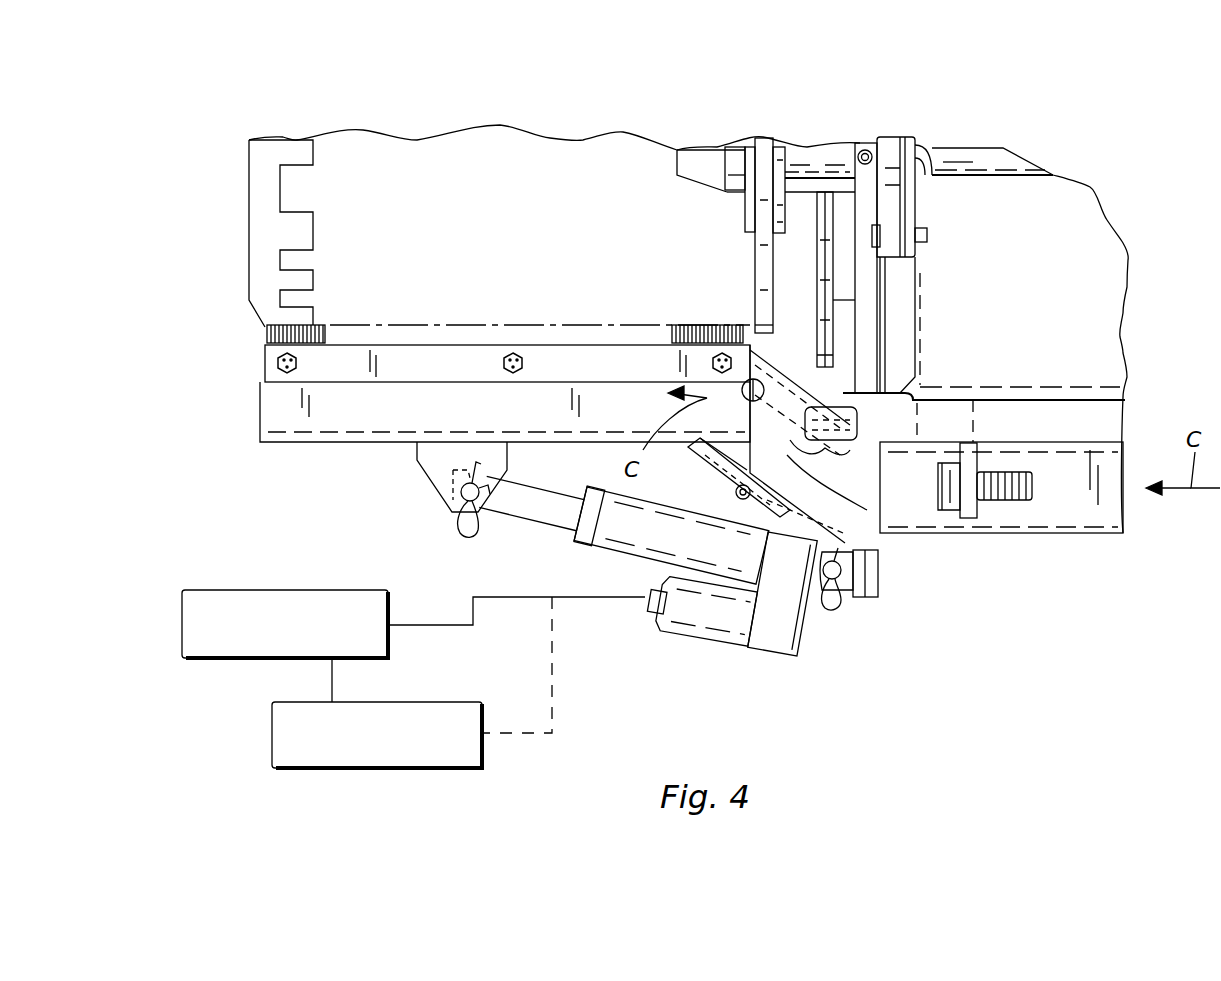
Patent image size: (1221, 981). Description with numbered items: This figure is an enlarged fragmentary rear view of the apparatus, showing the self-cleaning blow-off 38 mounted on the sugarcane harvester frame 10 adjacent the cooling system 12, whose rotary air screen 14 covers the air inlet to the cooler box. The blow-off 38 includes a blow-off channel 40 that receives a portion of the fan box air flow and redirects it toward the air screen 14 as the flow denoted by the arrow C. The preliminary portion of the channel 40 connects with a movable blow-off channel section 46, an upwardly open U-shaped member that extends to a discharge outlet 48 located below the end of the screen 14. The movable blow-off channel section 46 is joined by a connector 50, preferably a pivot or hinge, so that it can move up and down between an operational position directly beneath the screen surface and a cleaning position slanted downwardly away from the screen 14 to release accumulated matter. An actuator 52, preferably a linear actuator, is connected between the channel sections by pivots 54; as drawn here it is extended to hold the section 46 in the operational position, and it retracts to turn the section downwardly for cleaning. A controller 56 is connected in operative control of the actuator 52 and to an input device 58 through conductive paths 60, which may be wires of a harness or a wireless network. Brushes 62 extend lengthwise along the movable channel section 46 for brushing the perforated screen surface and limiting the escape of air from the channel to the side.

The sugarcane harvester frame 10 is at (1125, 135).
The cooling system 12 is at (1133, 257).
The rotary air screen 14 is at (248, 147).
The self-cleaning blow-off 38 is at (377, 167).
The blow-off channel 40 is at (1100, 535).
The movable blow-off channel section 46 is at (328, 445).
The discharge outlet 48 is at (263, 392).
The connector 50 is at (735, 468).
The actuator 52 is at (777, 655).
The pivots 54 is at (460, 494).
The controller 56 is at (228, 590).
The input device 58 is at (272, 738).
The conductive paths 60 is at (552, 657).
The brushes 62 is at (265, 341).